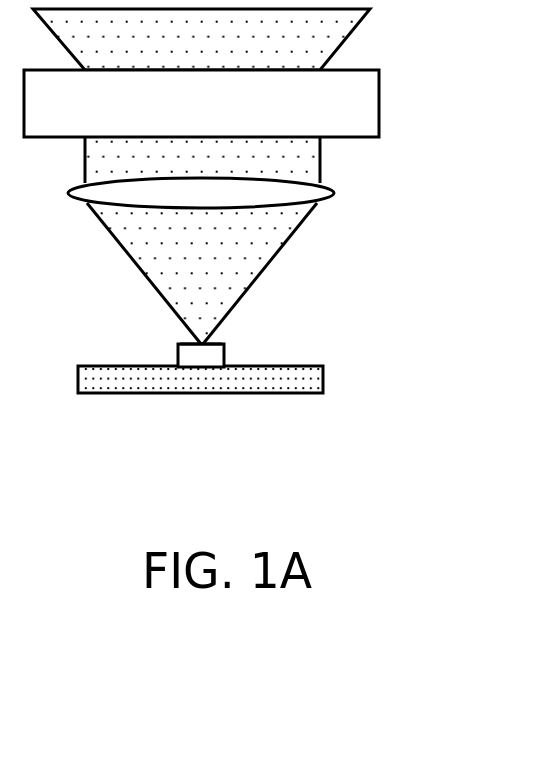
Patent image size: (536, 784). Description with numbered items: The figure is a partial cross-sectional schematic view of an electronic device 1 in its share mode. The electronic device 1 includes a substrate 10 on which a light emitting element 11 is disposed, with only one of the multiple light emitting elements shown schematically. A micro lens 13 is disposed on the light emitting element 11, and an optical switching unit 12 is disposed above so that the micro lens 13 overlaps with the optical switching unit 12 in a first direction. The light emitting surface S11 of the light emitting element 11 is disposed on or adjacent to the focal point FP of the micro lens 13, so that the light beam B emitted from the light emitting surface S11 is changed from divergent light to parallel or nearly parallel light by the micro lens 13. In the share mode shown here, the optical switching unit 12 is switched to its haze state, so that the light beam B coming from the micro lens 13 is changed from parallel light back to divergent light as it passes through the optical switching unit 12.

The electronic device 1 is at (492, 471).
The substrate 10 is at (290, 381).
The light emitting element 11 is at (207, 356).
The optical switching unit 12 is at (357, 106).
The micro lens 13 is at (317, 193).
The light beam B is at (237, 260).
The focal point FP is at (205, 342).
The light emitting surface S11 is at (188, 343).